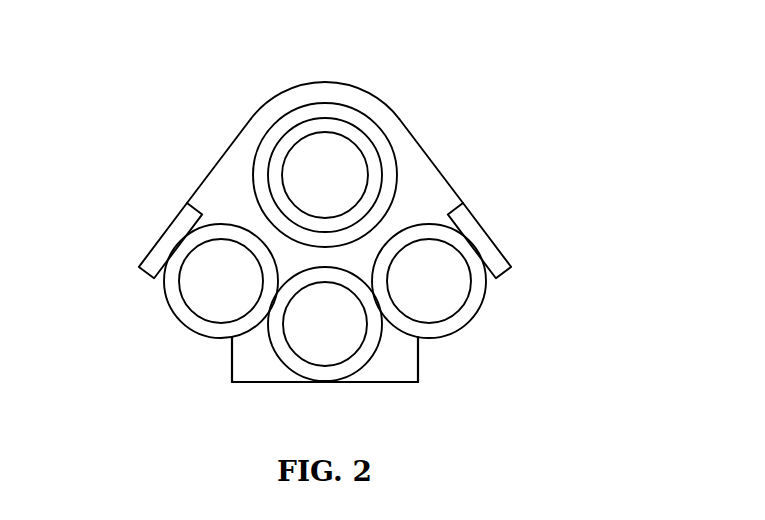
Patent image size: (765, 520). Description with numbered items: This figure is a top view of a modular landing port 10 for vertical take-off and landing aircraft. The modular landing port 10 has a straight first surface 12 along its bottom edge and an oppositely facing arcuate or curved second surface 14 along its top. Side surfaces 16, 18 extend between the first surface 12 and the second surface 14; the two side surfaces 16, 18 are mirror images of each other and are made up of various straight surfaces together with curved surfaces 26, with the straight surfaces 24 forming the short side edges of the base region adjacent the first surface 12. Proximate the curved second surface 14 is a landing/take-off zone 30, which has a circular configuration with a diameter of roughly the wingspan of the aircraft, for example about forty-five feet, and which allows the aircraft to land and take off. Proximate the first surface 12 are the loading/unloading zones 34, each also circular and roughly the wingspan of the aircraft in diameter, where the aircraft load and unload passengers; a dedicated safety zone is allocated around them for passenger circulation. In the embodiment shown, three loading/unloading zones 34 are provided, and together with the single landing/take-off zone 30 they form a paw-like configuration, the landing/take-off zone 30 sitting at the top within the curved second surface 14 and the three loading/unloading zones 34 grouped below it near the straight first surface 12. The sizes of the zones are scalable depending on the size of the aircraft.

The modular landing port 10 is at (513, 110).
The straight first surface 12 is at (275, 382).
The curved second surface 14 is at (328, 82).
The side surface 16 is at (173, 190).
The side surface 18 is at (472, 190).
The straight surface 24 is at (230, 360).
The curved surface 26 is at (170, 305).
The landing/take-off zone 30 is at (337, 157).
The loading/unloading zone 34 is at (205, 298).